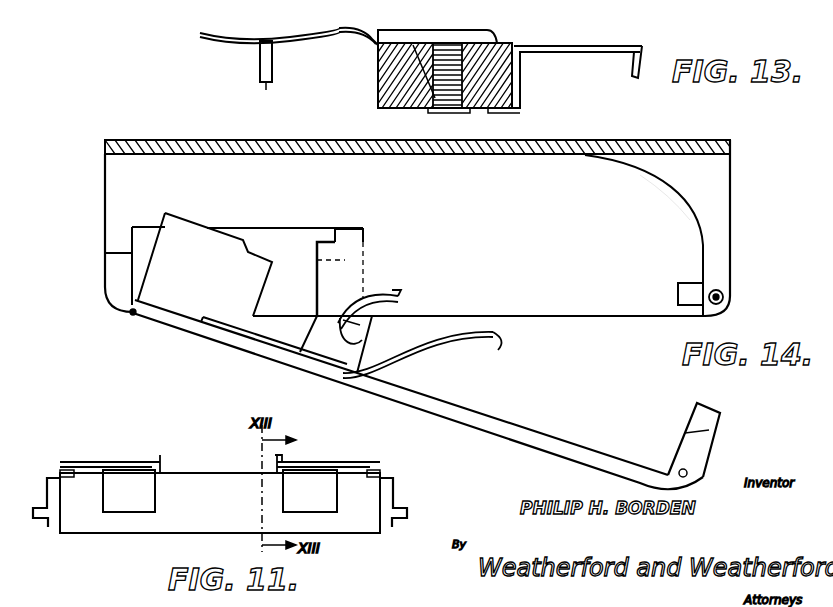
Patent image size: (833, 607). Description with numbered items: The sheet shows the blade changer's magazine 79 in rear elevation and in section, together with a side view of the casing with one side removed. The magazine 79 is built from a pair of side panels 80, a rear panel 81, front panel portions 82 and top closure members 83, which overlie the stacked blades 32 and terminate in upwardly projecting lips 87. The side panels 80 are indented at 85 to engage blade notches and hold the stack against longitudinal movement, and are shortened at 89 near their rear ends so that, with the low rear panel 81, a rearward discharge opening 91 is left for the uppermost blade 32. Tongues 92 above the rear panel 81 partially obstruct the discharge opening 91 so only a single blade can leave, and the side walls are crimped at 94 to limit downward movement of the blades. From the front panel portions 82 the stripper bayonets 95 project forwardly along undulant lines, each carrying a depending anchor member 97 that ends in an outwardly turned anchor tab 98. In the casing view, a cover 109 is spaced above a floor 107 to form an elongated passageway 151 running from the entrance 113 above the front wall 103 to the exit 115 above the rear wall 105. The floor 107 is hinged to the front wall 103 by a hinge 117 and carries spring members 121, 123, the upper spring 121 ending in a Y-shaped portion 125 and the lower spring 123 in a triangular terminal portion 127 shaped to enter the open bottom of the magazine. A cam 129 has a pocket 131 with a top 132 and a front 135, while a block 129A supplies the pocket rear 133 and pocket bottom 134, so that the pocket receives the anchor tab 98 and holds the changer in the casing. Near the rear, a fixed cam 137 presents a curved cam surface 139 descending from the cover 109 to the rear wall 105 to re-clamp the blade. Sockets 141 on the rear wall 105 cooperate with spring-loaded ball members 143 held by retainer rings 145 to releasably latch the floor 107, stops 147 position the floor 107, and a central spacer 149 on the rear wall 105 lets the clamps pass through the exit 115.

In FIG. 13, the stripper bayonet 95 is at (306, 36).
In FIG. 13, the anchor member 97 is at (262, 68).
In FIG. 11, the anchor member 97 is at (47, 490).
In FIG. 13, the anchor tab 98 is at (265, 83).
In FIG. 11, the anchor tab 98 is at (48, 518).
In FIG. 13, the front panel portion 82 is at (378, 89).
In FIG. 13, the lip 87 is at (472, 32).
In FIG. 11, the lip 87 is at (165, 455).
In FIG. 13, the blade 32 is at (420, 108).
In FIG. 13, the indent 85 is at (462, 112).
In FIG. 13, the rear panel 81 is at (523, 90).
In FIG. 11, the rear panel 81 is at (195, 500).
In FIG. 13, the discharge opening 91 is at (522, 47).
In FIG. 11, the discharge opening 91 is at (83, 472).
In FIG. 13, the tongue 92 is at (605, 47).
In FIG. 11, the tongue 92 is at (300, 490).
In FIG. 13, the crimp 94 is at (490, 113).
In FIG. 14, the cover 109 is at (203, 138).
In FIG. 14, the entrance 113 is at (105, 171).
In FIG. 14, the exit 115 is at (730, 171).
In FIG. 14, the passageway 151 is at (480, 178).
In FIG. 14, the cam surface 139 is at (655, 184).
In FIG. 14, the rear fixed cam 137 is at (662, 201).
In FIG. 14, the front wall 103 is at (132, 277).
In FIG. 14, the hinge 117 is at (133, 314).
In FIG. 14, the cam 129 is at (256, 228).
In FIG. 14, the pocket front 135 is at (317, 244).
In FIG. 14, the pocket top 132 is at (336, 230).
In FIG. 14, the pocket 131 is at (345, 253).
In FIG. 14, the block 129A is at (363, 243).
In FIG. 14, the pocket rear 133 is at (372, 322).
In FIG. 14, the pocket bottom 134 is at (365, 347).
In FIG. 14, the Y-shaped spring portion 125 is at (400, 296).
In FIG. 14, the triangular terminal portion 127 is at (502, 345).
In FIG. 14, the spring member 121 is at (238, 317).
In FIG. 14, the spring member 123 is at (240, 344).
In FIG. 14, the floor 107 is at (560, 442).
In FIG. 14, the central spacer 149 is at (706, 418).
In FIG. 14, the rear wall 105 is at (683, 449).
In FIG. 14, the socket 141 is at (688, 471).
In FIG. 14, the stop 147 is at (690, 292).
In FIG. 14, the spring-loaded ball member 143 is at (720, 290).
In FIG. 14, the retainer ring 145 is at (724, 297).
In FIG. 11, the magazine 79 is at (232, 470).
In FIG. 11, the top closure member 83 is at (135, 462).
In FIG. 11, the shortened side panel portion 89 is at (62, 464).
In FIG. 11, the side panel 80 is at (58, 534).